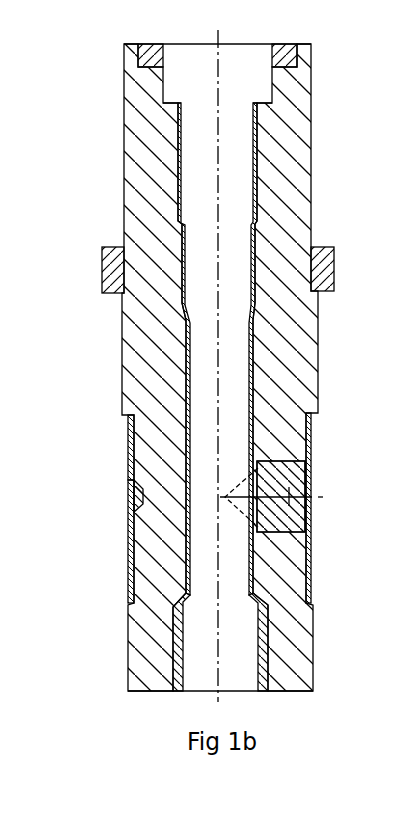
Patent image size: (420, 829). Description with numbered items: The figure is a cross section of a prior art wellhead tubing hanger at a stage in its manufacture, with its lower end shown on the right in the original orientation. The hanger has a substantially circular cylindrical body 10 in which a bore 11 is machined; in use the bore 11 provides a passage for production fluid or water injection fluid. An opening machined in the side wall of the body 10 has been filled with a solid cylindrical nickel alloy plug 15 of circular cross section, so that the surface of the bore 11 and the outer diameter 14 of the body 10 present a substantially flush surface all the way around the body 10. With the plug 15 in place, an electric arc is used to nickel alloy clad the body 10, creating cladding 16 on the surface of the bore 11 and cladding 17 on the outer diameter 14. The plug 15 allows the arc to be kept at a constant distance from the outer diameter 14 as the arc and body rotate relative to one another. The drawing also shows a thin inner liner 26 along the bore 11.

The body 10 is at (145, 117).
The bore 11 is at (192, 78).
The inner liner 26 is at (180, 156).
The cladding 17 is at (130, 462).
The outer diameter 14 is at (133, 543).
The cladding 16 is at (175, 647).
The nickel alloy plug 15 is at (280, 520).